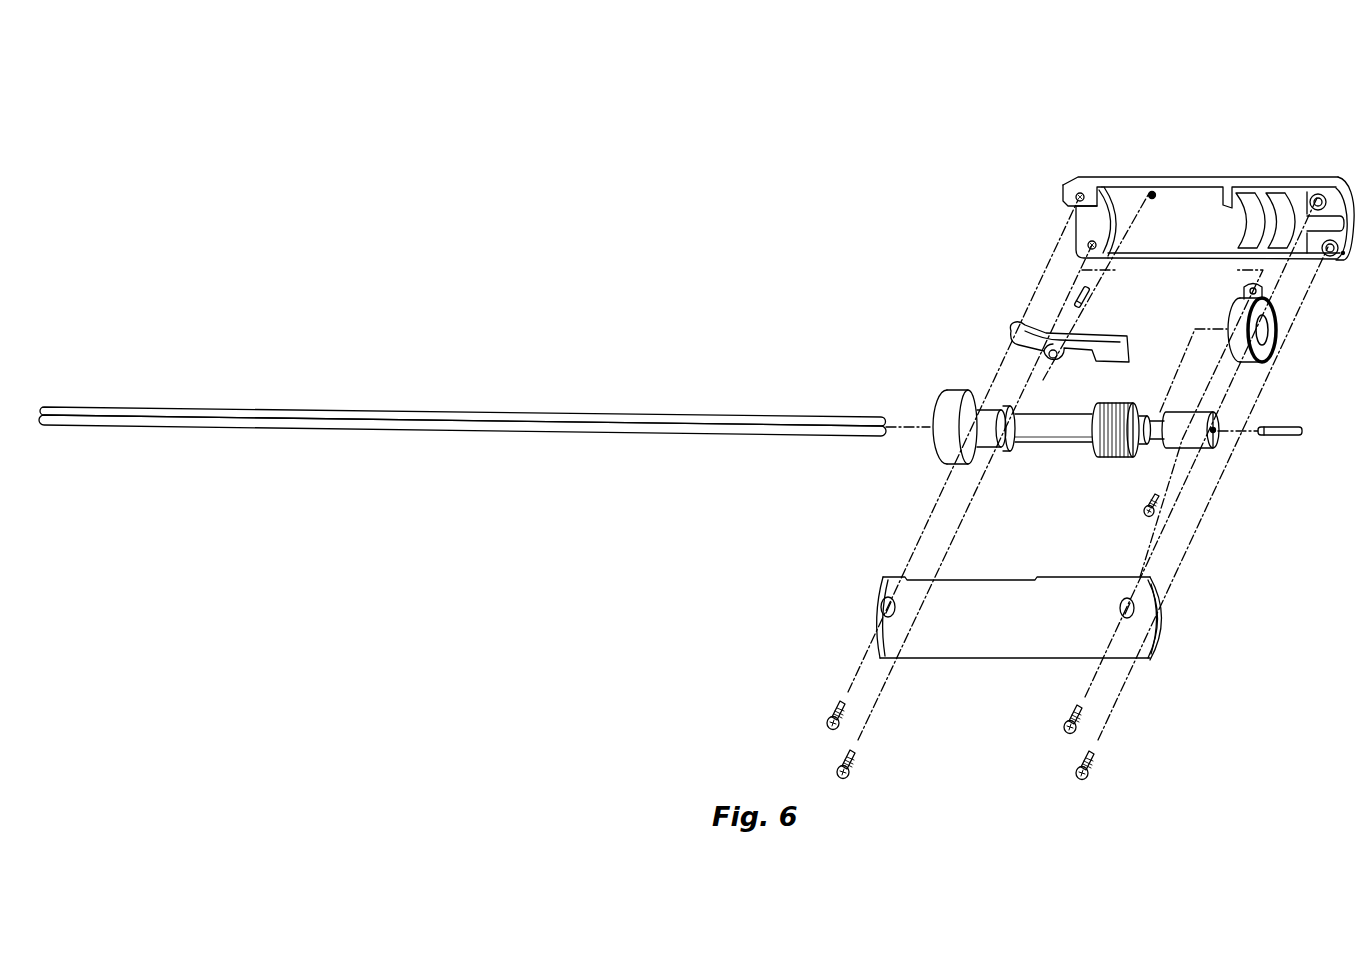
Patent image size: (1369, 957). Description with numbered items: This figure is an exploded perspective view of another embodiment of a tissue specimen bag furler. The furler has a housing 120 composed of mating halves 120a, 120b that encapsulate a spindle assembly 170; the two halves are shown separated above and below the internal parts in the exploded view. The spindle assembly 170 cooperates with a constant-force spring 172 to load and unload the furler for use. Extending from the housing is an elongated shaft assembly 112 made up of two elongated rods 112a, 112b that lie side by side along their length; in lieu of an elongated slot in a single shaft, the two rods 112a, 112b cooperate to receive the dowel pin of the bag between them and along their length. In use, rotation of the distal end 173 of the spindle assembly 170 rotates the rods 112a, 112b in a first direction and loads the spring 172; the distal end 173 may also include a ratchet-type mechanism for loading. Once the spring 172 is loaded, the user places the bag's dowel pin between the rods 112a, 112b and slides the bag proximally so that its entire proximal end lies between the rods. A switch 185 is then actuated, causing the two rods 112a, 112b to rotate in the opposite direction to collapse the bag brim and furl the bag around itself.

The elongated shaft assembly 112 is at (430, 408).
The elongated rod 112a is at (143, 406).
The elongated rod 112b is at (176, 430).
The housing 120 is at (1219, 179).
The housing half 120a is at (1284, 177).
The housing half 120b is at (1000, 660).
The spindle assembly 170 is at (1216, 427).
The spring 172 is at (1280, 331).
The distal end of the spindle assembly 173 is at (943, 463).
The switch 185 is at (1020, 323).